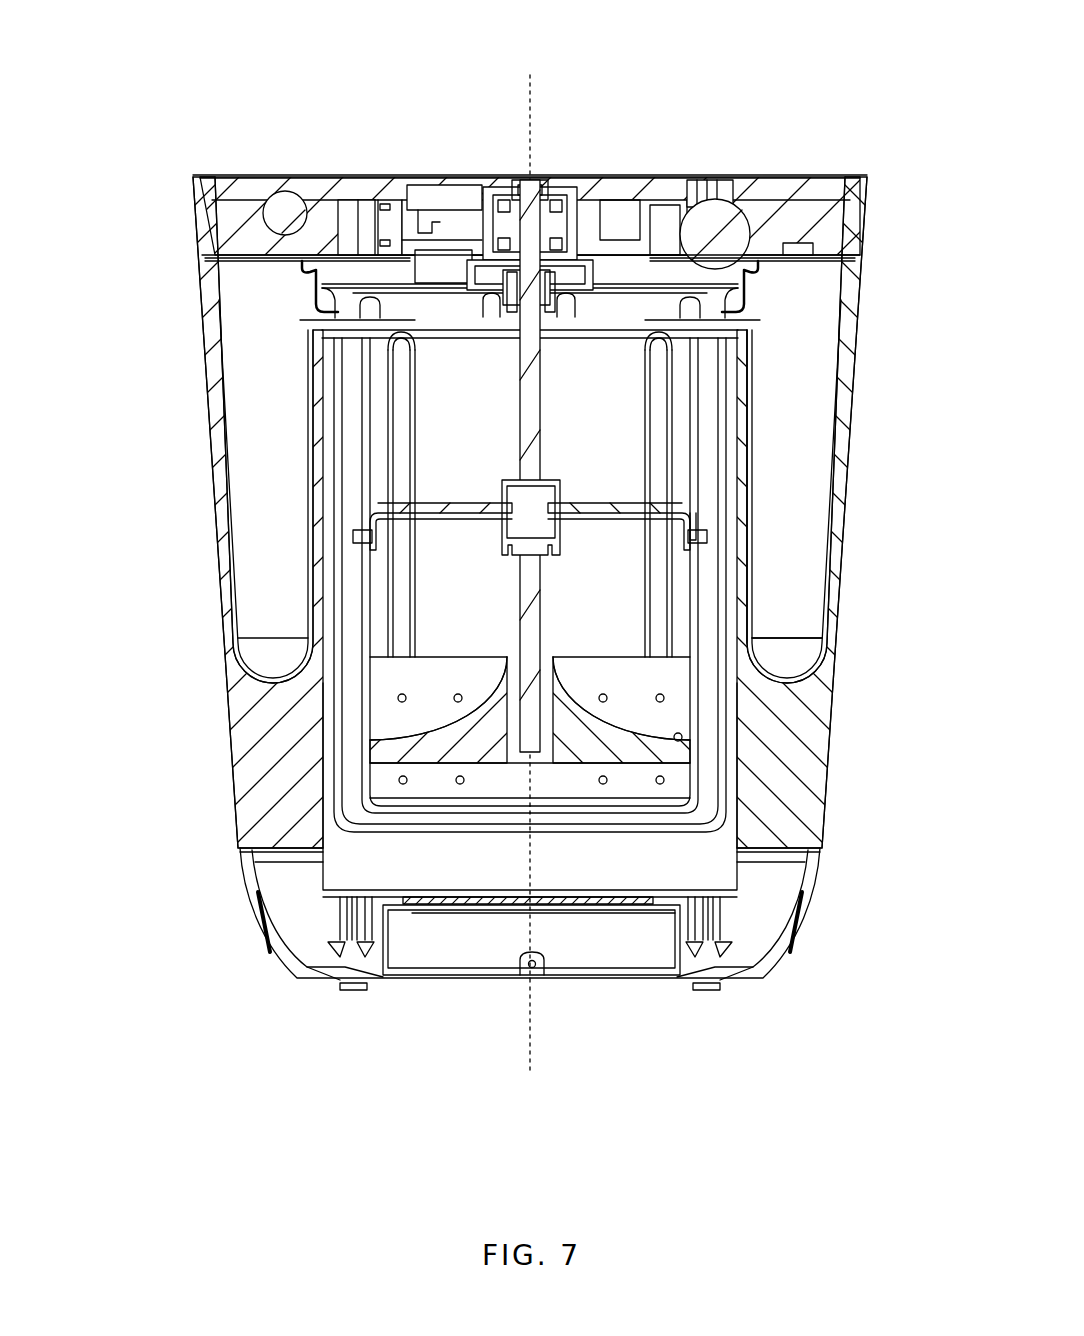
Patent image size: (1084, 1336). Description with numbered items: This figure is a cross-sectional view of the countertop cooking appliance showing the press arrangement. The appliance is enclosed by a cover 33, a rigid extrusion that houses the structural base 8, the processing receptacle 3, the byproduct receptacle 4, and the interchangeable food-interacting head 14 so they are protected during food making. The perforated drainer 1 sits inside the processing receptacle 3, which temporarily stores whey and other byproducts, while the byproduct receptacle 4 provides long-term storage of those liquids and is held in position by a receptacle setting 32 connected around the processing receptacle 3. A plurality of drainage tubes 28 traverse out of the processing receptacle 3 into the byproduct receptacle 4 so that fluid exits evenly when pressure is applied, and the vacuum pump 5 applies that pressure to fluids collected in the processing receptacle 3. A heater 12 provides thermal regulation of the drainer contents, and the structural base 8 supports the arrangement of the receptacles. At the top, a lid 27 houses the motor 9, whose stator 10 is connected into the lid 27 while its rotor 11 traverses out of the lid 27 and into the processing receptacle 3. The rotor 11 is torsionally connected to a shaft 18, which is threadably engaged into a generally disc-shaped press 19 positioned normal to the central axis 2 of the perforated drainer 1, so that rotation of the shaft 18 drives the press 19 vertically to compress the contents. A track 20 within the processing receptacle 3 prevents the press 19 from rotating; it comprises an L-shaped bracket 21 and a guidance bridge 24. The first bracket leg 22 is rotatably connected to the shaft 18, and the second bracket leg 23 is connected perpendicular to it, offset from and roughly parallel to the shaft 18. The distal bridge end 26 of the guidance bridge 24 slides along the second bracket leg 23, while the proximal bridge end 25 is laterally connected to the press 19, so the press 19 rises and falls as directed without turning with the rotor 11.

The perforated drainer 1 is at (740, 818).
The central axis 2 is at (536, 1070).
The processing receptacle 3 is at (466, 379).
The byproduct receptacle 4 is at (781, 608).
The vacuum pump 5 is at (720, 214).
The structural base 8 is at (260, 915).
The motor 9 is at (592, 222).
The stator 10 is at (513, 190).
The rotor 11 is at (538, 213).
The heater 12 is at (395, 872).
The interchangeable food-interacting head 14 is at (602, 674).
The shaft 18 is at (530, 565).
The press 19 is at (425, 780).
The track 20 is at (582, 493).
The L-shaped bracket 21 is at (738, 345).
The first bracket leg 22 is at (624, 302).
The second bracket leg 23 is at (694, 468).
The guidance bridge 24 is at (458, 505).
The proximal bridge end 25 is at (476, 522).
The distal bridge end 26 is at (410, 503).
The lid 27 is at (628, 66).
The drainage tubes 28 is at (352, 345).
The receptacle setting 32 is at (270, 680).
The cover 33 is at (223, 470).